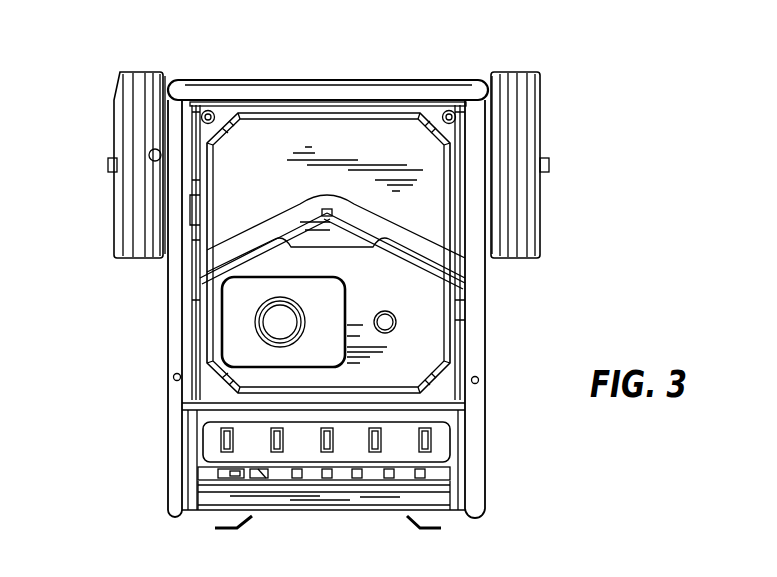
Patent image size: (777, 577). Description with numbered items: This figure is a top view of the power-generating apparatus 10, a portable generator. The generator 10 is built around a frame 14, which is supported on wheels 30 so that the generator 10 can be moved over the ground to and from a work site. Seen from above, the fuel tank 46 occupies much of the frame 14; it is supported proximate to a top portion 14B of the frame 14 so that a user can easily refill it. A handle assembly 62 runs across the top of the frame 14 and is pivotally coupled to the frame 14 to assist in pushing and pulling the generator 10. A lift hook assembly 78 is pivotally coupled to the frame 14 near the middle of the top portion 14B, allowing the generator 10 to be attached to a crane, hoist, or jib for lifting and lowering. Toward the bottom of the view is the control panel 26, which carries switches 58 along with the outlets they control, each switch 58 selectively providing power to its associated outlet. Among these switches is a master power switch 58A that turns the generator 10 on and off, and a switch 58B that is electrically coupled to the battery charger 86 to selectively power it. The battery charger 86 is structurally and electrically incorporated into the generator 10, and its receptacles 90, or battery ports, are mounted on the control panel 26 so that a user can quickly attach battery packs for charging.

The power-generating apparatus 10 is at (621, 75).
The frame 14 is at (476, 350).
The top portion of the frame 14B is at (172, 342).
The control panel 26 is at (437, 500).
The wheels 30 is at (120, 128).
The fuel tank 46 is at (412, 345).
The switches 58 is at (327, 480).
The master power switch 58A is at (230, 479).
The switch 58B is at (263, 479).
The handle assembly 62 is at (312, 88).
The lift hook assembly 78 is at (290, 208).
The battery charger 86 is at (346, 450).
The receptacles 90 is at (327, 434).